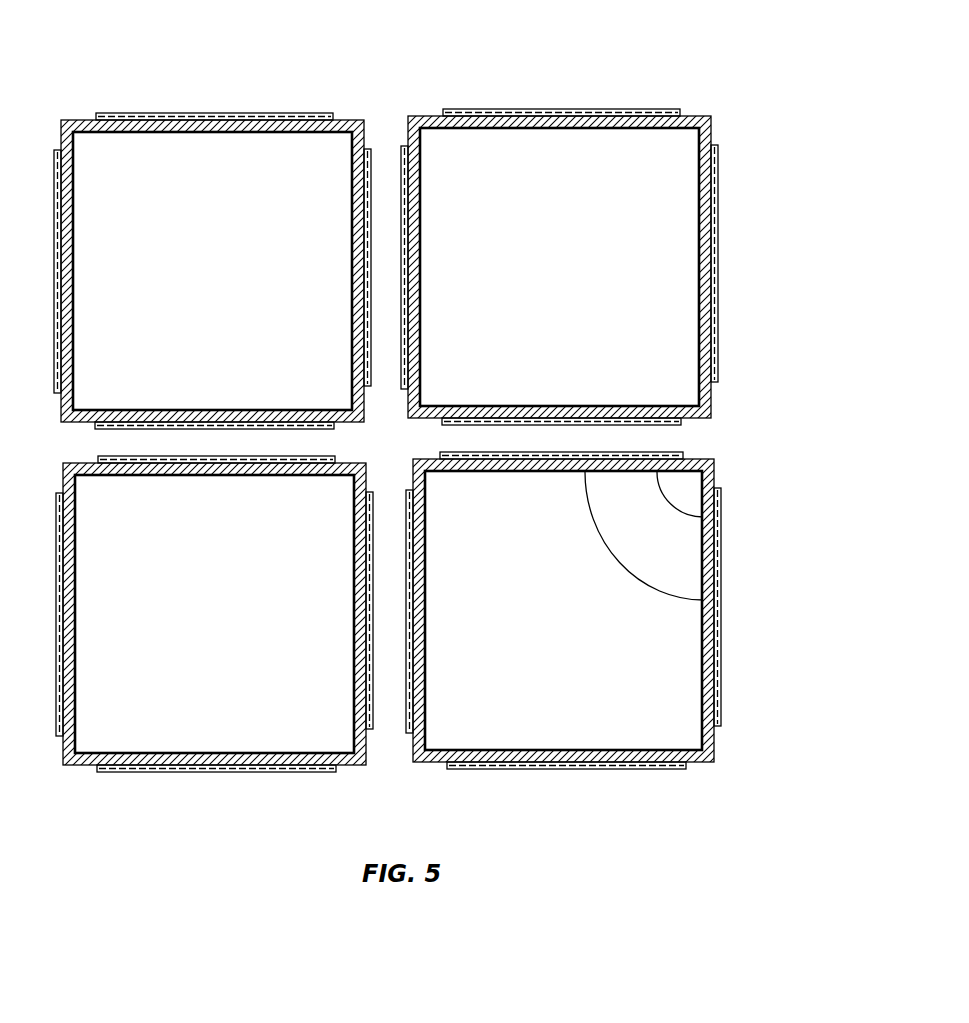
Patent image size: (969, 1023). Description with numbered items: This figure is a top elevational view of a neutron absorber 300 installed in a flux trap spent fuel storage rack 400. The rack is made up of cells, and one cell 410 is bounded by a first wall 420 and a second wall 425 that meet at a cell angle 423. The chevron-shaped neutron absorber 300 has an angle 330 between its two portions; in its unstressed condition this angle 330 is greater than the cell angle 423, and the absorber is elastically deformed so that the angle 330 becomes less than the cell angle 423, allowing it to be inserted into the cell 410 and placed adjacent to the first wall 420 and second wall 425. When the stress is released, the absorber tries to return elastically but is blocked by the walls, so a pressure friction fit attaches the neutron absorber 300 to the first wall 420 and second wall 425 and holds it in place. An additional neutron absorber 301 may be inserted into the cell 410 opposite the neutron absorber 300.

The neutron absorber 300 is at (703, 116).
The additional neutron absorber 301 is at (425, 707).
The flux trap spent fuel storage rack 400 is at (109, 860).
The cell 410 is at (573, 595).
The first wall 420 is at (648, 468).
The cell angle 423 is at (668, 510).
The second wall 425 is at (712, 580).
The angle 330 is at (632, 572).